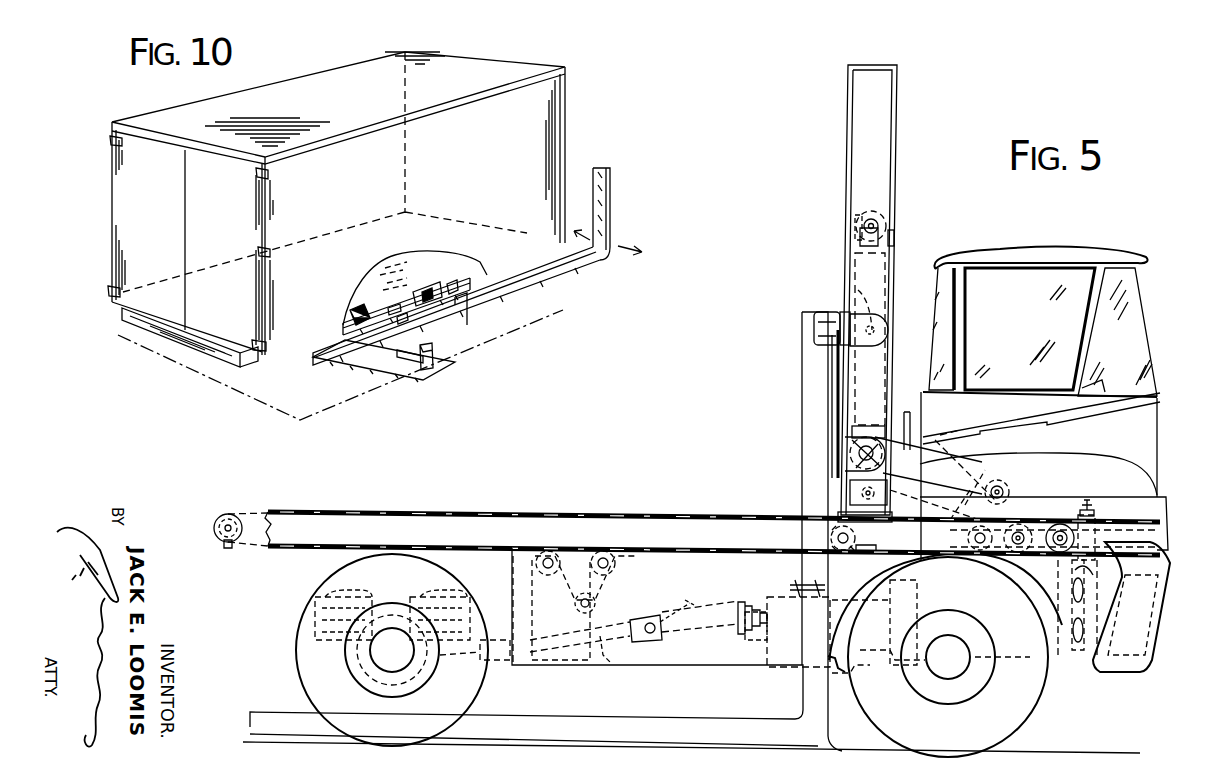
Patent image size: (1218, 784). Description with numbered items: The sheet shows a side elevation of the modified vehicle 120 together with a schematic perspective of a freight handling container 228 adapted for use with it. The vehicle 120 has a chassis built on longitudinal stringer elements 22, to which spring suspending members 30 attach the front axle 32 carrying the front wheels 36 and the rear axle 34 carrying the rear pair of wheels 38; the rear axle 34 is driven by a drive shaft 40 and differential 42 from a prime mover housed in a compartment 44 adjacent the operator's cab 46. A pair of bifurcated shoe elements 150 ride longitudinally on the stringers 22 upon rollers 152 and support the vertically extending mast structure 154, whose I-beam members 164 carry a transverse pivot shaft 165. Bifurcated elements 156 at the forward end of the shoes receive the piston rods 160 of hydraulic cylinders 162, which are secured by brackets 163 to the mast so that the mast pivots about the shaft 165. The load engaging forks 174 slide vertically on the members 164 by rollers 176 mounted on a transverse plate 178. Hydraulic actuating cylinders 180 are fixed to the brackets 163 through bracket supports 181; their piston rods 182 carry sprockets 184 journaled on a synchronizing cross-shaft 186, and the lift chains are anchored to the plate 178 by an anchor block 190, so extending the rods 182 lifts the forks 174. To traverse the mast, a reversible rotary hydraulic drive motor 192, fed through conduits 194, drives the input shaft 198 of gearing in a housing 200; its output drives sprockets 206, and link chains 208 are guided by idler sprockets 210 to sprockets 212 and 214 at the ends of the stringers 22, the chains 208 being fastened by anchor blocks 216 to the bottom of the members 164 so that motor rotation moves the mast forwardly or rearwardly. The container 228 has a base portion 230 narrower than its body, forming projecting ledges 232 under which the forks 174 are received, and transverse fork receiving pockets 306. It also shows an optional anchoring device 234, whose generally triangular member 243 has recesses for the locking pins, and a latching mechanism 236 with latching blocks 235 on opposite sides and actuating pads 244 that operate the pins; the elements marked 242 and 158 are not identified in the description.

In FIG. 10, the freight handling container 228 is at (354, 86).
In FIG. 10, the projecting ledges 232 is at (113, 308).
In FIG. 10, the base portion 230 is at (198, 345).
In FIG. 10, the load engaging forks 174 is at (603, 206).
In FIG. 5, the load engaging forks 174 is at (806, 440).
In FIG. 10, the actuating pads 244 is at (352, 298).
In FIG. 10, the transverse fork receiving pockets 306 is at (350, 315).
In FIG. 10, the latching mechanism 236 is at (428, 288).
In FIG. 10, the latching blocks 235 is at (442, 284).
In FIG. 10, the hook 242 is at (467, 325).
In FIG. 10, the generally triangular member 243 is at (433, 352).
In FIG. 10, the anchoring device 234 is at (440, 372).
In FIG. 5, the mast structure 154 is at (909, 154).
In FIG. 5, the vertically extending I-beam members 164 is at (858, 135).
In FIG. 5, the sprockets 184 is at (884, 206).
In FIG. 5, the cross-shaft 186 is at (848, 218).
In FIG. 5, the piston rods 182 is at (896, 244).
In FIG. 5, the hydraulic actuating cylinders 180 is at (853, 258).
In FIG. 5, the rollers 176 is at (856, 290).
In FIG. 5, the transverse plate 178 is at (835, 342).
In FIG. 5, the anchor block 190 is at (840, 392).
In FIG. 5, the bracket supports 181 is at (868, 416).
In FIG. 5, the hydraulic cylinders 162 is at (903, 447).
In FIG. 5, the brackets 163 is at (850, 478).
In FIG. 5, the transverse pivot shaft 165 is at (852, 494).
In FIG. 5, the bifurcated shoe elements 150 is at (845, 518).
In FIG. 5, the rollers 152 is at (830, 540).
In FIG. 5, the anchor blocks 216 is at (870, 552).
In FIG. 5, the piston rods 160 is at (975, 470).
In FIG. 5, the bifurcated elements 156 is at (1012, 506).
In FIG. 5, the drive sprocket 158 is at (1030, 558).
In FIG. 5, the sprockets 214 is at (1067, 525).
In FIG. 5, the operator's cab 46 is at (1058, 250).
In FIG. 5, the vehicle 120 is at (971, 236).
In FIG. 5, the compartment 44 is at (1142, 448).
In FIG. 5, the longitudinal stringer elements 22 is at (423, 524).
In FIG. 5, the link chains 208 is at (254, 512).
In FIG. 5, the sprockets 212 is at (228, 548).
In FIG. 5, the drive shaft 40 is at (500, 653).
In FIG. 5, the housing 200 is at (512, 580).
In FIG. 5, the idler sprockets 210 is at (540, 556).
In FIG. 5, the sprockets 206 is at (597, 602).
In FIG. 5, the rotary hydraulic drive motor 192 is at (640, 620).
In FIG. 5, the conduits 194 is at (695, 614).
In FIG. 5, the input shaft 198 is at (610, 662).
In FIG. 5, the rear pair of wheels 38 is at (300, 660).
In FIG. 5, the differential 42 is at (365, 670).
In FIG. 5, the rear axle 34 is at (392, 650).
In FIG. 5, the spring suspending members 30 is at (312, 608).
In FIG. 5, the front wheels 36 is at (1025, 703).
In FIG. 5, the front axle 32 is at (928, 668).